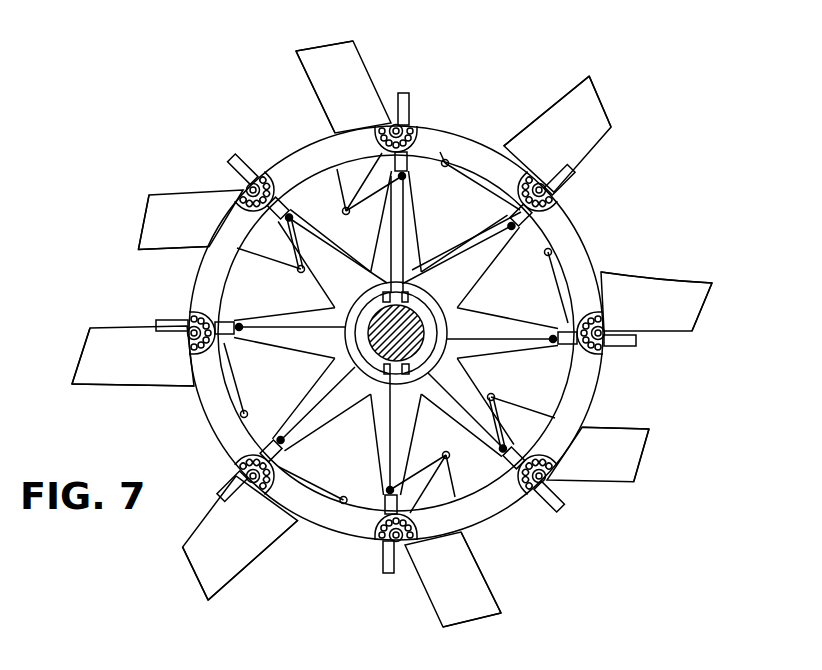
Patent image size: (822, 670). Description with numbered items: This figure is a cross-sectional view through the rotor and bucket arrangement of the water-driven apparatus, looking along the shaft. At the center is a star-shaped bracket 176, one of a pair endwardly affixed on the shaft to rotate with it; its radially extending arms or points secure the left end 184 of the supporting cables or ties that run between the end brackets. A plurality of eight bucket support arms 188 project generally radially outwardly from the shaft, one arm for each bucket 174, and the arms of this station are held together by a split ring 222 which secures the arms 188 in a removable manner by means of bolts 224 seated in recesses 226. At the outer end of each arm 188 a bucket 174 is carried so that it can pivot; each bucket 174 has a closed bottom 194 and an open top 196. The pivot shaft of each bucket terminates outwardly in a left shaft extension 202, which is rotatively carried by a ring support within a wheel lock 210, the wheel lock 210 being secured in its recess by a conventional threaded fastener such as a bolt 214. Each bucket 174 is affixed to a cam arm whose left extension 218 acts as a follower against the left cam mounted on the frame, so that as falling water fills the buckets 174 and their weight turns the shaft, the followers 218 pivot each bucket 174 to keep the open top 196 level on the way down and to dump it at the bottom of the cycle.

The bucket 174 is at (296, 50).
The star-shaped bracket 176 is at (497, 262).
The left end of supporting cable 184 is at (405, 176).
The bucket support arm 188 is at (410, 113).
The closed bottom 194 is at (362, 60).
The open top 196 is at (306, 74).
The left shaft extension 202 is at (392, 106).
The wheel lock 210 is at (362, 122).
The bolt 214 is at (567, 432).
The left extension of cam arm 218 is at (447, 158).
The split ring 222 is at (432, 298).
The bolt 224 is at (345, 318).
The recess 226 is at (375, 298).